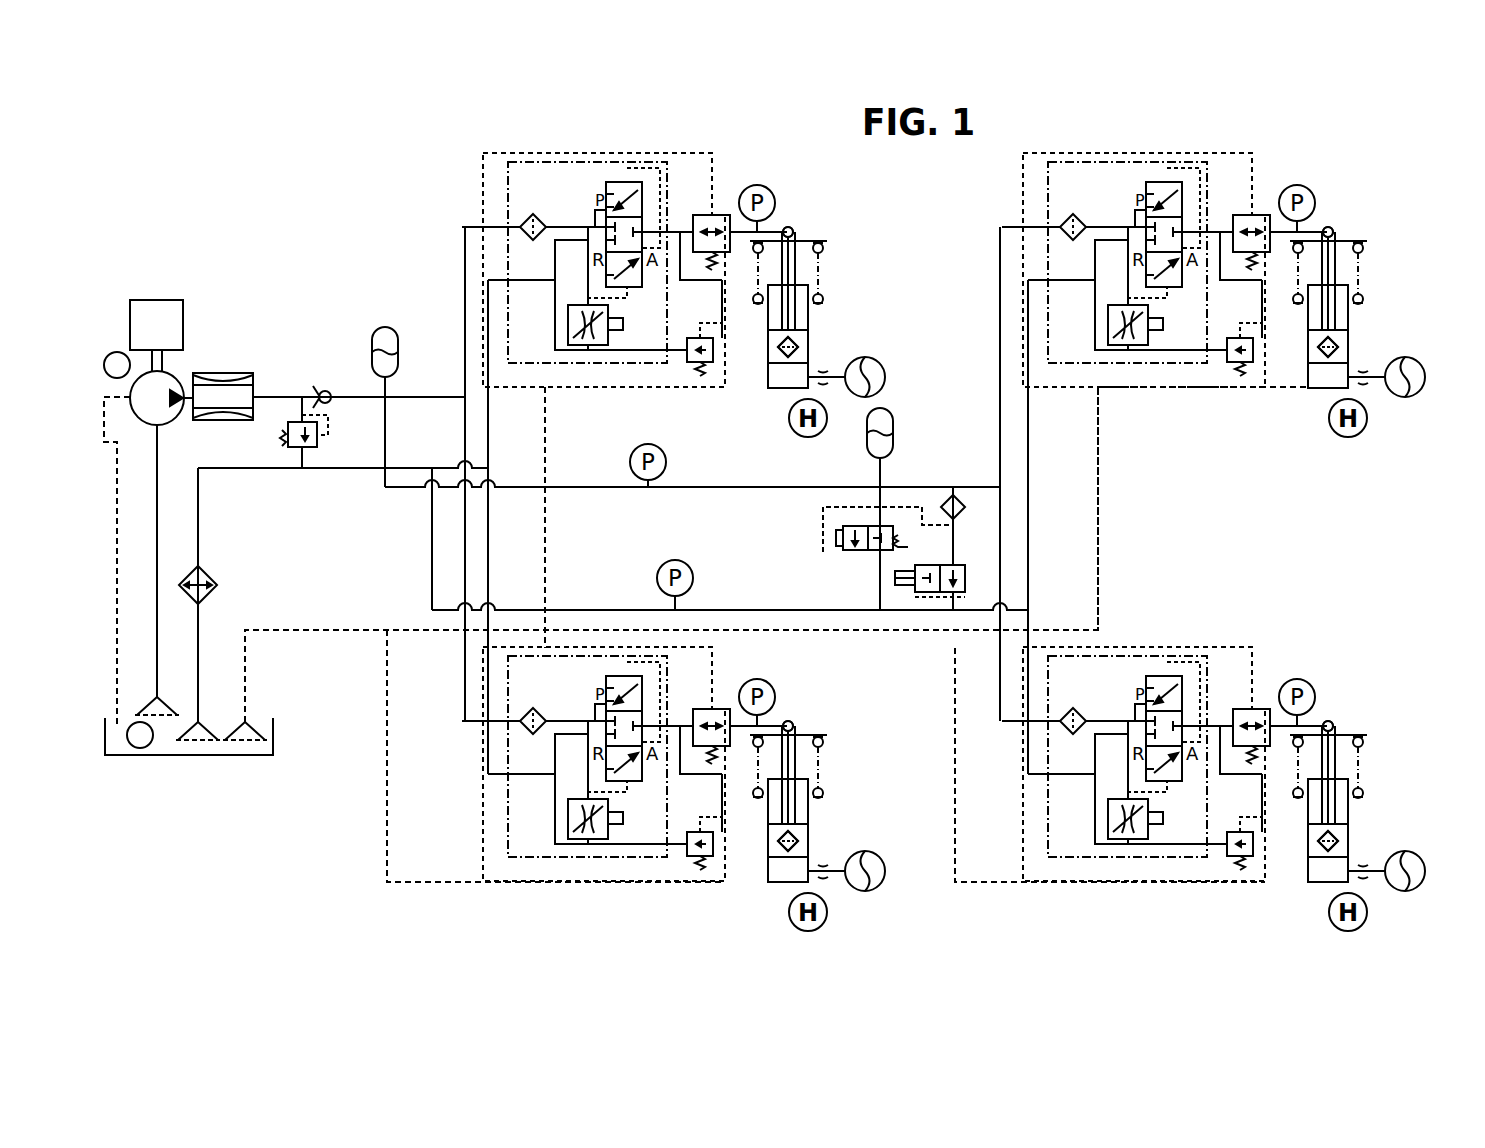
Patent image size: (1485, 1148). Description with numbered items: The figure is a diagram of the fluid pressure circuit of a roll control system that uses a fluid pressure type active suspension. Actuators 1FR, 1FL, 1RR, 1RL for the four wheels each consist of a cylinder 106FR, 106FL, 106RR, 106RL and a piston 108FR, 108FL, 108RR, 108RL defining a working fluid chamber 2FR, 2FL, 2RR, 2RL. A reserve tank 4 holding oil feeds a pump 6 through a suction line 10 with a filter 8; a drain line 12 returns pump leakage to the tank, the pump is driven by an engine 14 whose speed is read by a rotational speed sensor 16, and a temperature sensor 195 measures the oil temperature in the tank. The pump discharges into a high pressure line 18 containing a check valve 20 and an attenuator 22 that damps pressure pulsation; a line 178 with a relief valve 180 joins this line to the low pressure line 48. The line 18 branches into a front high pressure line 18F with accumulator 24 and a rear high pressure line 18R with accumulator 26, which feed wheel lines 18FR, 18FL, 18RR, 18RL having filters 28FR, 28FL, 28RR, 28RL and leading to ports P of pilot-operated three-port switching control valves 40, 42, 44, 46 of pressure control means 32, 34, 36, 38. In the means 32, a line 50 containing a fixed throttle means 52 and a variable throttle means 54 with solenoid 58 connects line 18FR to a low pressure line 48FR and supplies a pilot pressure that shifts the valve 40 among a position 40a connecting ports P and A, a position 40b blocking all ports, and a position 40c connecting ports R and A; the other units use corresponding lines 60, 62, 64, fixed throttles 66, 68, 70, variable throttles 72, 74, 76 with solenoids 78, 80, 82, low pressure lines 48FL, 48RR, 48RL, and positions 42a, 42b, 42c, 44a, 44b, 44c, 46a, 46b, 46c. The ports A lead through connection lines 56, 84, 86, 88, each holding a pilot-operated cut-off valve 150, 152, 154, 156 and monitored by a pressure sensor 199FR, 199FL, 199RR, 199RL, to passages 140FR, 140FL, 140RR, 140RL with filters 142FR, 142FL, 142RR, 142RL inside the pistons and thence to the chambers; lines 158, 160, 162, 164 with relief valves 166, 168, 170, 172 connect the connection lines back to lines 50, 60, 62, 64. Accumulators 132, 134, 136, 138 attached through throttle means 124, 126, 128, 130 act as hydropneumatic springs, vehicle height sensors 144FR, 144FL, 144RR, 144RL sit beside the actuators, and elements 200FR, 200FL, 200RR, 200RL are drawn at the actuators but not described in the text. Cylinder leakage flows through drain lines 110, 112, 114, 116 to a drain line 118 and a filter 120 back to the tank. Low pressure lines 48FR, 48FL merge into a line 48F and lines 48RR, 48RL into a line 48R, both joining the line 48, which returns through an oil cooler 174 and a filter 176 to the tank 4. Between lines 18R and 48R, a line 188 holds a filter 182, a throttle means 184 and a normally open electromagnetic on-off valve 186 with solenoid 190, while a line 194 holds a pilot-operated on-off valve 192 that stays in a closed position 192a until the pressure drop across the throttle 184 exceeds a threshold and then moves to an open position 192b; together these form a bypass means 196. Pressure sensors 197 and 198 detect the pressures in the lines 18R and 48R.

The front right wheel 1FR is at (775, 397).
The front left wheel 1FL is at (777, 911).
The rear right wheel 1RR is at (1316, 419).
The rear left wheel 1RL is at (1316, 910).
The front right hydraulic cylinder 2FR is at (768, 383).
The front left hydraulic cylinder 2FL is at (770, 801).
The rear right hydraulic cylinder 2RR is at (1309, 307).
The rear left hydraulic cylinder 2RL is at (1310, 801).
The reservoir 4 is at (109, 757).
The pump 6 is at (185, 416).
The drain 8 is at (162, 718).
The drain passage 10 is at (165, 505).
The control signal line 12 is at (116, 476).
The pump motor 14 is at (183, 299).
The pressure switch 16 is at (117, 351).
The supply passage 18 is at (357, 397).
The front supply passage 18F is at (423, 397).
The rear supply passage 18R is at (702, 490).
The front right supply passage 18FR is at (462, 233).
The front left supply passage 18FL is at (463, 545).
The rear right supply passage 18RR is at (1000, 283).
The rear left supply passage 18RL is at (1000, 721).
The check valve 20 is at (318, 390).
The pulsation damper 22 is at (225, 373).
The main accumulator 24 is at (385, 327).
The rear accumulator 26 is at (893, 413).
The filter 28FR is at (523, 215).
The filter 28FL is at (557, 697).
The filter 28RR is at (1098, 203).
The filter 28RL is at (1098, 702).
The front right valve unit 32 is at (520, 152).
The front left valve unit 34 is at (604, 788).
The rear right valve unit 36 is at (1144, 243).
The rear left valve unit 38 is at (1144, 790).
The directional control valve 40 is at (617, 181).
The valve position 40a is at (630, 288).
The valve position 40b is at (650, 215).
The valve position 40c is at (605, 196).
The directional control valve 42 is at (624, 675).
The valve position 42a is at (636, 789).
The valve position 42b is at (675, 687).
The valve position 42c is at (600, 686).
The directional control valve 44 is at (1164, 201).
The valve position 44a is at (1174, 296).
The valve position 44b is at (1215, 180).
The valve position 44c is at (1142, 192).
The directional control valve 46 is at (1164, 696).
The valve position 46a is at (1174, 784).
The valve position 46b is at (1215, 679).
The valve position 46c is at (1144, 686).
The return passage 48 is at (309, 472).
The front return passage 48F is at (446, 466).
The rear return passage 48R is at (575, 607).
The front right return passage 48FR is at (492, 386).
The front left return passage 48FL is at (521, 634).
The rear right return passage 48RR is at (1061, 367).
The rear left return passage 48RL is at (1034, 630).
The bypass passage 50 is at (554, 290).
The flow control valve 52 is at (579, 282).
The passage 54 is at (590, 352).
The piston rod 56 is at (790, 228).
The solenoid 58 is at (619, 352).
The bypass passage 60 is at (597, 789).
The bypass passage 62 is at (1140, 295).
The bypass passage 64 is at (1141, 789).
The flow control valve 66 is at (564, 780).
The flow control valve 68 is at (1103, 286).
The flow control valve 70 is at (1104, 780).
The passage 72 is at (598, 883).
The passage 74 is at (1119, 386).
The passage 76 is at (1115, 884).
The solenoid 78 is at (629, 869).
The solenoid 80 is at (1151, 372).
The solenoid 82 is at (1152, 870).
The piston rod 84 is at (819, 697).
The piston rod 86 is at (1323, 193).
The piston rod 88 is at (1326, 681).
The stroke sensor 106FR is at (823, 300).
The stroke sensor 106FL is at (824, 777).
The stroke sensor 106RR is at (1364, 283).
The stroke sensor 106RL is at (1364, 775).
The piston rod 108FR is at (796, 272).
The piston rod 108FL is at (840, 775).
The piston rod 108RR is at (1380, 281).
The piston rod 108RL is at (1380, 775).
The signal line 110 is at (549, 404).
The signal line 112 is at (449, 883).
The signal line 114 is at (1097, 538).
The signal line 116 is at (984, 883).
The signal line 118 is at (311, 626).
The drain 120 is at (247, 756).
The orifice 124 is at (829, 388).
The orifice 126 is at (855, 897).
The orifice 128 is at (1388, 405).
The orifice 130 is at (1389, 898).
The gas spring 132 is at (885, 377).
The gas spring 134 is at (879, 870).
The gas spring 136 is at (1413, 376).
The gas spring 138 is at (1413, 870).
The stroke sensor 140FR is at (822, 246).
The stroke sensor 140FL is at (825, 756).
The stroke sensor 140RR is at (1365, 262).
The stroke sensor 140RL is at (1365, 753).
The filter 142FR is at (808, 345).
The filter 142FL is at (829, 836).
The filter 142RR is at (1369, 342).
The filter 142RL is at (1369, 833).
The height sensor 144FR is at (822, 434).
The height sensor 144FL is at (819, 934).
The height sensor 144RR is at (1360, 443).
The height sensor 144RL is at (1357, 931).
The pressure control valve 150 is at (730, 215).
The pressure control valve 152 is at (699, 713).
The pressure control valve 154 is at (1238, 214).
The pressure control valve 156 is at (1236, 705).
The passage 158 is at (680, 270).
The passage 160 is at (701, 768).
The passage 162 is at (1241, 274).
The passage 164 is at (1241, 769).
The relief valve 166 is at (691, 364).
The relief valve 168 is at (693, 850).
The relief valve 170 is at (1221, 353).
The relief valve 172 is at (1228, 850).
The return filter 174 is at (217, 574).
The drain 176 is at (200, 756).
The relief valve spring 178 is at (282, 436).
The relief valve 180 is at (317, 439).
The filter 182 is at (950, 530).
The solenoid valve 184 is at (957, 538).
The passage 186 is at (922, 612).
The passage 188 is at (958, 489).
The passage 190 is at (890, 614).
The solenoid valve 192 is at (850, 552).
The pilot passage 192a is at (905, 519).
The solenoid 192b is at (843, 540).
The passage 194 is at (885, 486).
The temperature sensor 195 is at (140, 757).
The passage 196 is at (868, 624).
The pressure sensor 197 is at (646, 463).
The pressure sensor 198 is at (694, 578).
The pressure sensor 199FR is at (760, 184).
The pressure sensor 199FL is at (777, 677).
The pressure sensor 199RR is at (1317, 177).
The pressure sensor 199RL is at (1316, 671).
The stroke sensor 200FR is at (806, 234).
The stroke sensor 200FL is at (819, 705).
The stroke sensor 200RR is at (1359, 211).
The stroke sensor 200RL is at (1362, 701).